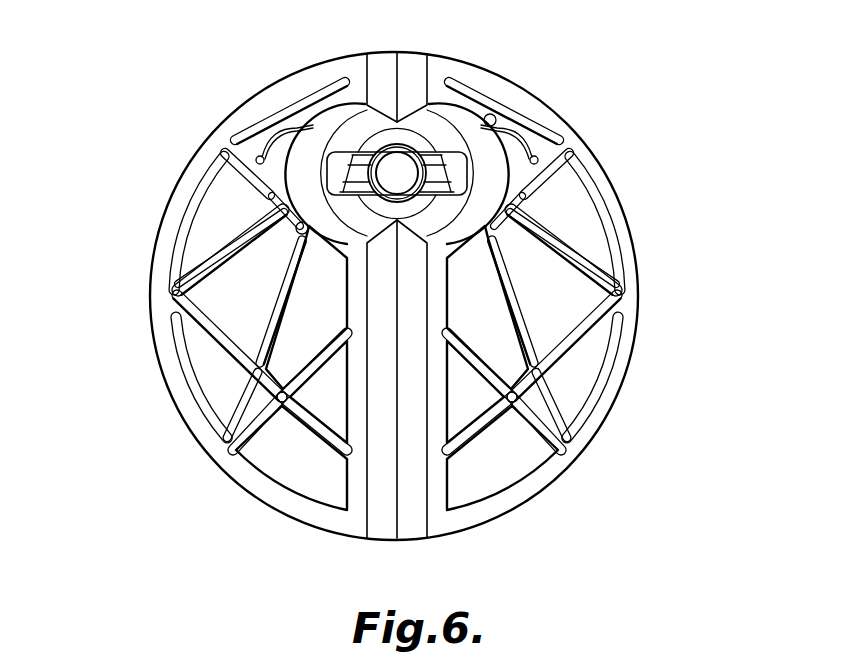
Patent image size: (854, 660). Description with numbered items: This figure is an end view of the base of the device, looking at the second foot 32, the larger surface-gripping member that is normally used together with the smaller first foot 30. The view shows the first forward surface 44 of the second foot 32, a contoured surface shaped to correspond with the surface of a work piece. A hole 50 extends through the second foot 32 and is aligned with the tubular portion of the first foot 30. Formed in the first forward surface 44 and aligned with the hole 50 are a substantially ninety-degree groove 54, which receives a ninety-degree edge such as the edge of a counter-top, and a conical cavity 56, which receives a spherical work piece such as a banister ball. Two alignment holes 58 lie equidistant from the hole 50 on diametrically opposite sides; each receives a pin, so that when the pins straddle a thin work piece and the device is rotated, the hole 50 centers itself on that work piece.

The first foot 30 is at (338, 165).
The second foot 32 is at (207, 140).
The first forward surface 44 is at (637, 292).
The hole 50 is at (466, 165).
The 90-angle groove 54 is at (410, 66).
The conical cavity 56 is at (449, 135).
The alignment holes 58 is at (298, 233).